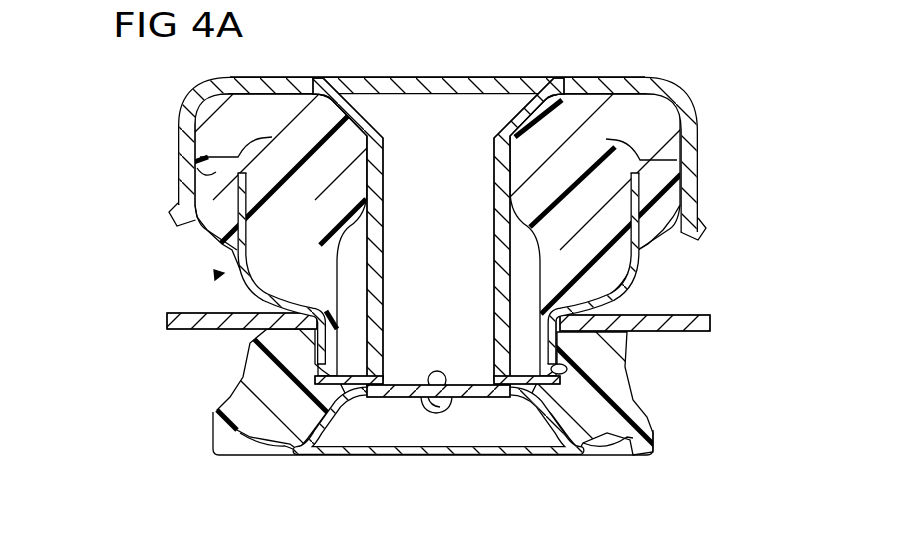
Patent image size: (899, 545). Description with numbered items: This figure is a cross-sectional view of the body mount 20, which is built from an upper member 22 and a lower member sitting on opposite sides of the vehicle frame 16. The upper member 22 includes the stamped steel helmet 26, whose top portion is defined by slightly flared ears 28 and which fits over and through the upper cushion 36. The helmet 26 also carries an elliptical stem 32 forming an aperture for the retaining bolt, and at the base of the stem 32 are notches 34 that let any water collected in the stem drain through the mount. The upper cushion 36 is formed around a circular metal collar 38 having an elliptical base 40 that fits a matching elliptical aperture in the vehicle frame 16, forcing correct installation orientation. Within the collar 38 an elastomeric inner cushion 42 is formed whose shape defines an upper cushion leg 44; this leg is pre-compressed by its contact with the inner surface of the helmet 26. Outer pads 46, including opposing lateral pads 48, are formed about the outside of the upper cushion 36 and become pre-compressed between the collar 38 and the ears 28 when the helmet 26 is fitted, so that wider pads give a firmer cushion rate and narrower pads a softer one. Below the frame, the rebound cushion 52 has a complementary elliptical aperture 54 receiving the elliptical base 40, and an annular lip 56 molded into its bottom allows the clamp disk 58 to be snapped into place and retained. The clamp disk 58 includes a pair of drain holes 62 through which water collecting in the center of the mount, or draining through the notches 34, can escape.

The vehicle frame 16 is at (683, 317).
The body mount 20 is at (149, 380).
The upper member 22 is at (617, 51).
The helmet 26 is at (460, 77).
The ears 28 is at (700, 172).
The elliptical stem 32 is at (392, 260).
The notches 34 is at (436, 372).
The upper cushion 36 is at (213, 276).
The metal collar 38 is at (236, 250).
The elliptical base 40 is at (250, 350).
The inner cushion 42 is at (230, 222).
The upper cushion leg 44 is at (320, 122).
The outer pads 46 is at (210, 175).
The lateral pads 48 is at (210, 232).
The rebound cushion 52 is at (637, 415).
The elliptical aperture 54 is at (567, 371).
The annular lip 56 is at (232, 445).
The clamp disk 58 is at (322, 425).
The drain holes 62 is at (453, 400).